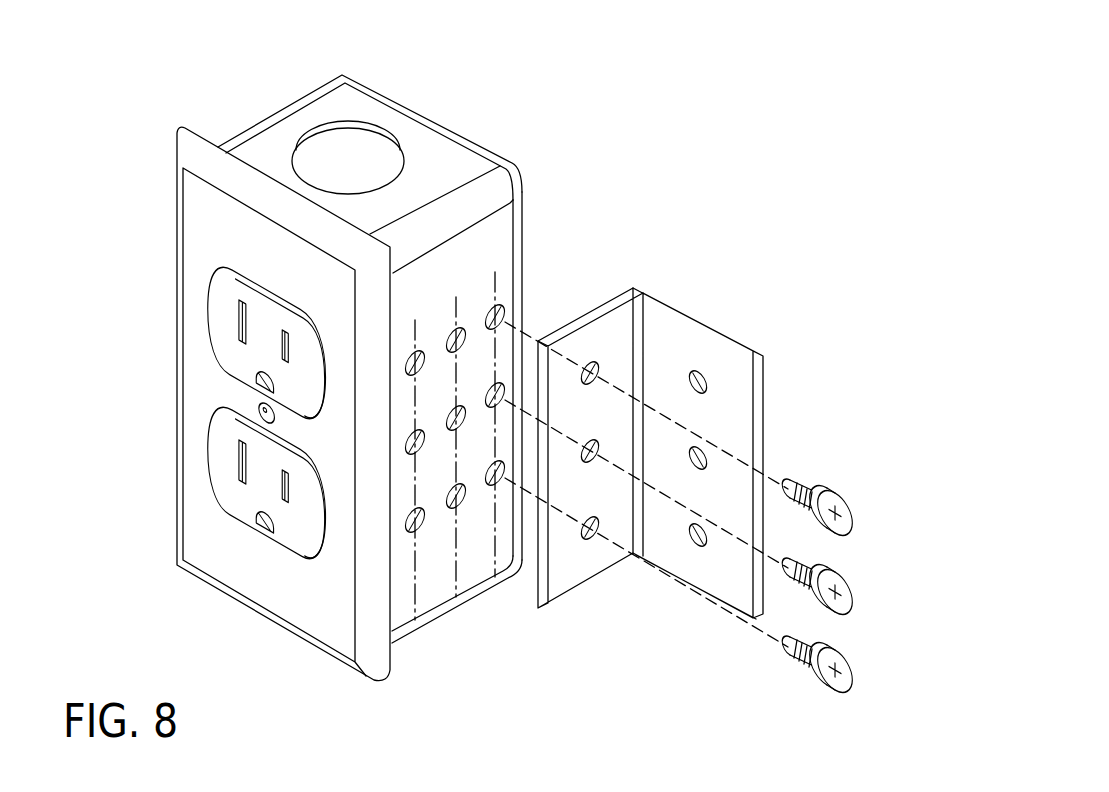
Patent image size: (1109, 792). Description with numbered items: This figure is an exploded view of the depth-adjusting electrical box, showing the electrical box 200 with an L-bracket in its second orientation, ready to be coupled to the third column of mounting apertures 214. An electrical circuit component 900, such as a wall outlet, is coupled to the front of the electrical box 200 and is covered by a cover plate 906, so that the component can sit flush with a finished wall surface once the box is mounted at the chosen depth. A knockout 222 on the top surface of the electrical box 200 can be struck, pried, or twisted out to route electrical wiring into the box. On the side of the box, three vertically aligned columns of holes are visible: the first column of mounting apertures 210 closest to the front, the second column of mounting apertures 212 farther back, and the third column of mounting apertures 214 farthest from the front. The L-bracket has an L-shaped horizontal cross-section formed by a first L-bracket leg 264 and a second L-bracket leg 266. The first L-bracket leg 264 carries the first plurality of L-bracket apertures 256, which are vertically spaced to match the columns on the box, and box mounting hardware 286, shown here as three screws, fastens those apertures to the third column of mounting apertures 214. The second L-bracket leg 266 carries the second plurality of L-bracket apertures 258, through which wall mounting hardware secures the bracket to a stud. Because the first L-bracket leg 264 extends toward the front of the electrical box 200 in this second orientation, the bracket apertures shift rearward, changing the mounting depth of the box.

The electrical box 200 is at (287, 103).
The knockout 222 is at (405, 147).
The first column of mounting apertures 210 is at (423, 625).
The second column of mounting apertures 212 is at (467, 600).
The third column of mounting apertures 214 is at (507, 578).
The cover plate 906 is at (177, 225).
The electrical circuit component 900 is at (220, 347).
The first L-bracket leg 264 is at (582, 343).
The second L-bracket leg 266 is at (728, 585).
The first plurality of L-bracket apertures 256 is at (596, 527).
The second plurality of L-bracket apertures 258 is at (706, 530).
The box mounting hardware 286 is at (850, 657).